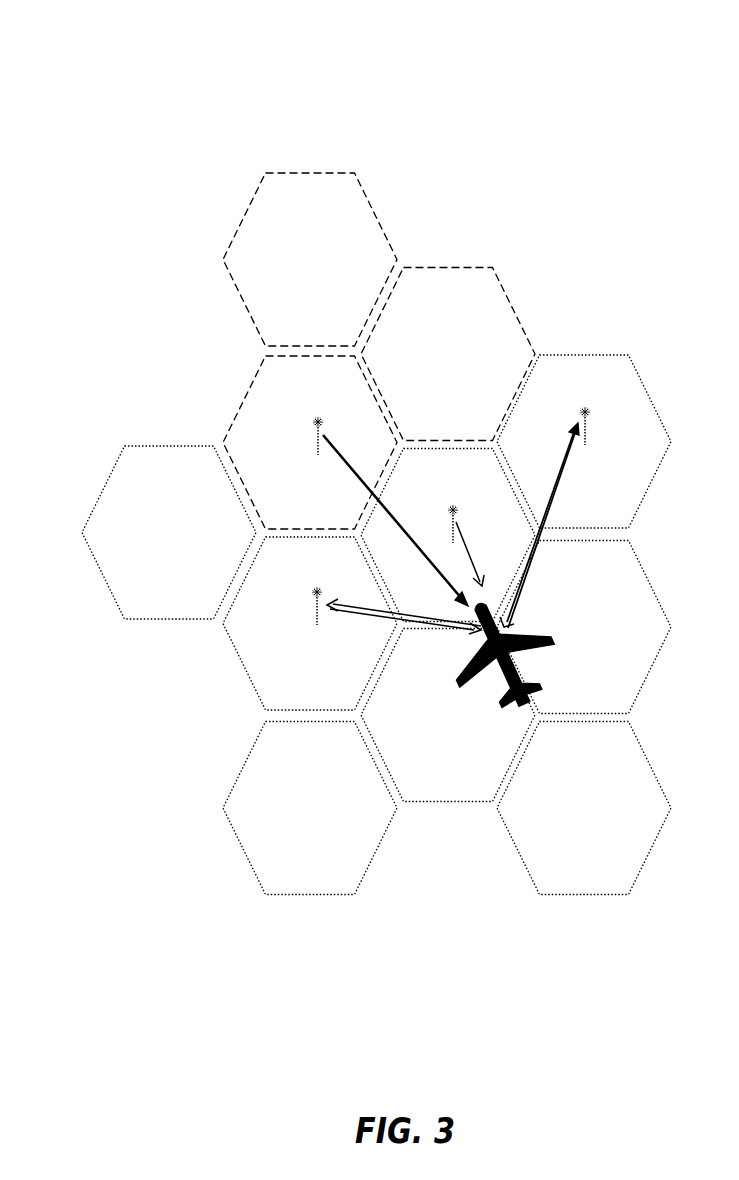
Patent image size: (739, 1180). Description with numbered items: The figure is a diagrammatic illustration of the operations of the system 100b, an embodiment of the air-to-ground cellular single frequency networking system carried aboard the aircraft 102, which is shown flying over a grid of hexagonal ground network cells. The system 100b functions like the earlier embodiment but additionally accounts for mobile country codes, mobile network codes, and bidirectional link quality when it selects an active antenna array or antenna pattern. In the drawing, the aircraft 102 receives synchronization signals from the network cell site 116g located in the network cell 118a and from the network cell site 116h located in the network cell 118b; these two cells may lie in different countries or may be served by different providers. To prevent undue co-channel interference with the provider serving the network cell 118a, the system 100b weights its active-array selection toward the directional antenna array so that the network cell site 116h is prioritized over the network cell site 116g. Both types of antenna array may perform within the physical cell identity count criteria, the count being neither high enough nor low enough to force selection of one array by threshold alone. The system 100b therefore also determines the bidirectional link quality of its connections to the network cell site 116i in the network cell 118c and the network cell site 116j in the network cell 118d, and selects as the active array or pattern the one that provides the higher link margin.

The system 100b is at (82, 77).
The aircraft 102 is at (465, 686).
The network cell site 116g is at (313, 437).
The network cell site 116h is at (446, 522).
The network cell site 116i is at (313, 608).
The network cell site 116j is at (591, 426).
The network cell 118a is at (327, 522).
The network cell 118b is at (490, 476).
The network cell 118c is at (330, 703).
The network cell 118d is at (618, 519).